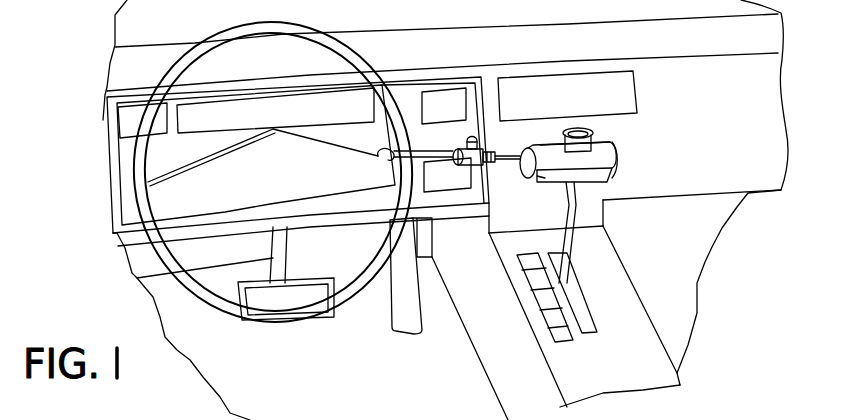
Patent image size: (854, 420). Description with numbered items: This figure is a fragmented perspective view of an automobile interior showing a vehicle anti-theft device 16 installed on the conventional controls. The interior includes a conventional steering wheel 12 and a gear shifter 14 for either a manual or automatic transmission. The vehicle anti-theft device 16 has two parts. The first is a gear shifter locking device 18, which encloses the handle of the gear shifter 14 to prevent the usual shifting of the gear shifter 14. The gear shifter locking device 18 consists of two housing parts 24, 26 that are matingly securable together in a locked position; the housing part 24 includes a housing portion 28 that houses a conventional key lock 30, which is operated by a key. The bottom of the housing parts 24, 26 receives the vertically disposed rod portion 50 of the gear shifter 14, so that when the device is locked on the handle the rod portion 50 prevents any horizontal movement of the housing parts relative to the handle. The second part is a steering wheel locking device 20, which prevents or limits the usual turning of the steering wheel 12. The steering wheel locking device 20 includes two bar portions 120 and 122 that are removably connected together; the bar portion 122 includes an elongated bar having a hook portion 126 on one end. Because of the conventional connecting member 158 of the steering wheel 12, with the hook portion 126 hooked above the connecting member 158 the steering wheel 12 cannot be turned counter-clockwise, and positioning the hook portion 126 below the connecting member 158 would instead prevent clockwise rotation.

The steering wheel 12 is at (302, 30).
The gear shifter 14 is at (584, 192).
The vehicle anti-theft device 16 is at (544, 133).
The gear shifter locking device 18 is at (630, 148).
The steering wheel locking device 20 is at (468, 130).
The housing part 24 is at (545, 178).
The housing part 26 is at (613, 153).
The housing portion 28 is at (601, 133).
The key lock 30 is at (586, 131).
The rod portion 50 is at (560, 248).
The bar portion 120 is at (488, 137).
The bar portion 122 is at (439, 142).
The hook portion 126 is at (378, 158).
The connecting member 158 is at (300, 183).